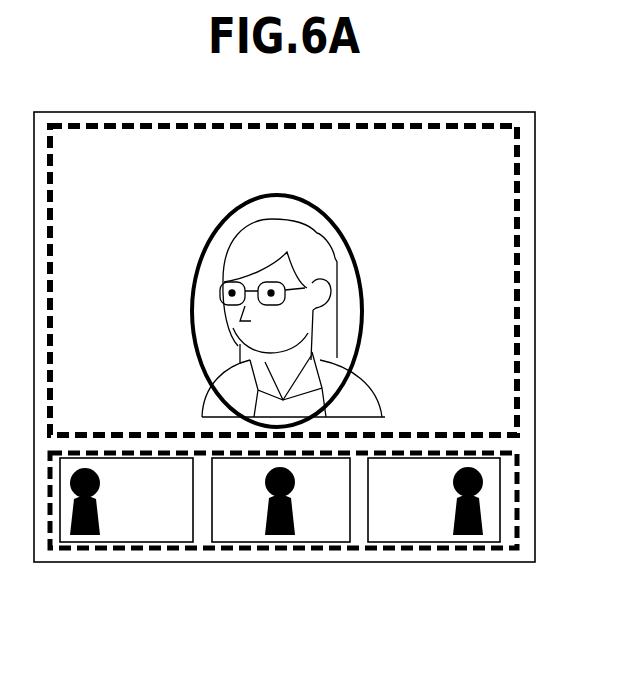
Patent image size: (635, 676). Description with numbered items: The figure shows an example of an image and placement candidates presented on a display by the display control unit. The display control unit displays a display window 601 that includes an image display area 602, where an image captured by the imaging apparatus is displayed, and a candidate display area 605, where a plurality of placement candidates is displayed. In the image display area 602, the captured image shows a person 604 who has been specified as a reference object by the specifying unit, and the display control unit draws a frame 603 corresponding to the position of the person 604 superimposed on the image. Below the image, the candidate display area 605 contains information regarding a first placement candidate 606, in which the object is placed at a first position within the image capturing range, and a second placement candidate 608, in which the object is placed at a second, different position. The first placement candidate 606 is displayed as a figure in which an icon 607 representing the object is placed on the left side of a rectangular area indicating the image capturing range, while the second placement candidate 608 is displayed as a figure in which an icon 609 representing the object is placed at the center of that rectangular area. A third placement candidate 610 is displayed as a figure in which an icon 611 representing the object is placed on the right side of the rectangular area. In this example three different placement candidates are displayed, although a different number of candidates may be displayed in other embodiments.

The display window 601 is at (459, 112).
The image display area 602 is at (513, 270).
The frame 603 is at (318, 213).
The person 604 is at (337, 265).
The candidate display area 605 is at (517, 500).
The first placement candidate 606 is at (155, 545).
The icon 607 is at (85, 540).
The second placement candidate 608 is at (335, 545).
The icon 609 is at (280, 540).
The third placement candidate 610 is at (410, 545).
The icon 611 is at (468, 540).